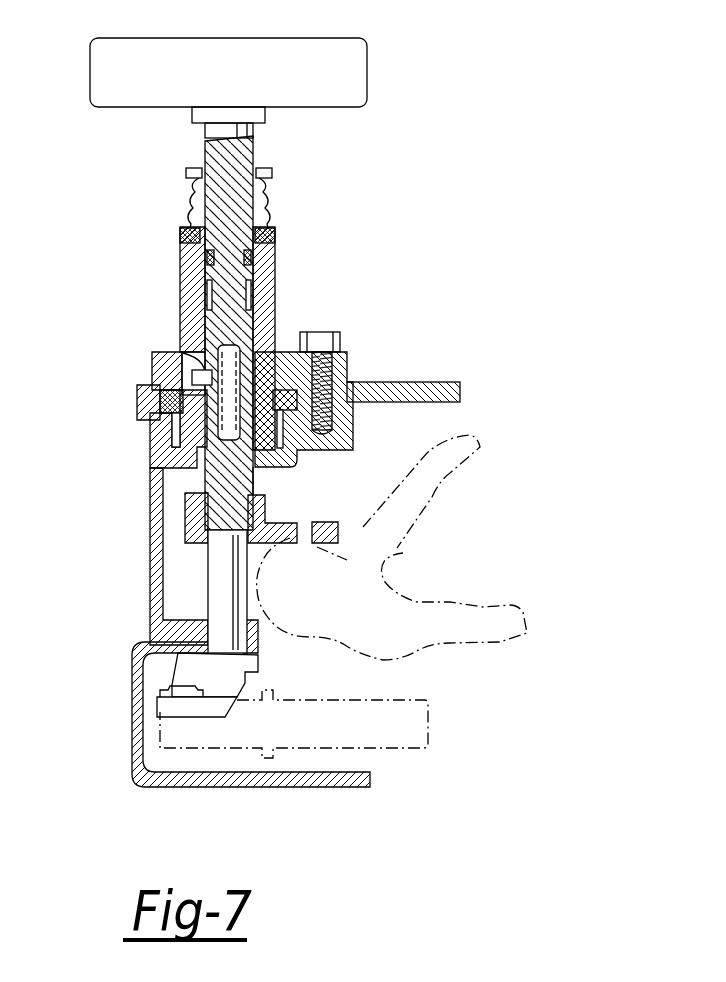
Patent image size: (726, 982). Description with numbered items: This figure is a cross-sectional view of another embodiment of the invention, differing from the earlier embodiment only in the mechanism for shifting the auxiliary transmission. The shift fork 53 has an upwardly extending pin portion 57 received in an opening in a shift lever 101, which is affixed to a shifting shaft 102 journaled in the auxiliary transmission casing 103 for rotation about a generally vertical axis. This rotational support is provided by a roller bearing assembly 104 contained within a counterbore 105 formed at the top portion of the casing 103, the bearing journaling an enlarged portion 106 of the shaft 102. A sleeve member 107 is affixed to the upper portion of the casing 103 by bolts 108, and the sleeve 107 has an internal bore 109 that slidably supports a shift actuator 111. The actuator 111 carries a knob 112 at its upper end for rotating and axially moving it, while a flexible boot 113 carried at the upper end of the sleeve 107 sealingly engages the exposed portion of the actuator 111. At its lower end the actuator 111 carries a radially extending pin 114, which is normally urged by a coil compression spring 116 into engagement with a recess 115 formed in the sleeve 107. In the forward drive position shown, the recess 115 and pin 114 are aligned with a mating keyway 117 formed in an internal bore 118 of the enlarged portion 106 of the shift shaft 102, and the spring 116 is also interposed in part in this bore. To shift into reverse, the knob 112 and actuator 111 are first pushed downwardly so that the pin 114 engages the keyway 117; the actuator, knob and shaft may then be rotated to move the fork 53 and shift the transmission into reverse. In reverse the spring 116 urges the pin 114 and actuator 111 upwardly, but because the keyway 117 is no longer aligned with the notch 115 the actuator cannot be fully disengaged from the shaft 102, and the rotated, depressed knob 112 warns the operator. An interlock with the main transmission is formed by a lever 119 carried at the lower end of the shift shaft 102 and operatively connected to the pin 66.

The knob 112 is at (368, 80).
The shift actuator 111 is at (255, 153).
The flexible boot 113 is at (275, 210).
The internal bore 109 is at (183, 233).
The sleeve member 107 is at (275, 283).
The bolts 108 is at (332, 333).
The counterbore 105 is at (265, 435).
The coil compression spring 116 is at (205, 335).
The recess 115 is at (182, 350).
The radially extending pin 114 is at (192, 378).
The enlarged portion 106 is at (137, 395).
The roller bearing assembly 104 is at (160, 415).
The keyway 117 is at (192, 420).
The internal bore 118 is at (253, 482).
The shift lever 101 is at (185, 515).
The auxiliary transmission casing 103 is at (152, 565).
The shifting shaft 102 is at (210, 603).
The lever 119 is at (175, 675).
The pin 66 is at (410, 752).
The pin portion 57 is at (303, 535).
The shift fork 53 is at (482, 447).